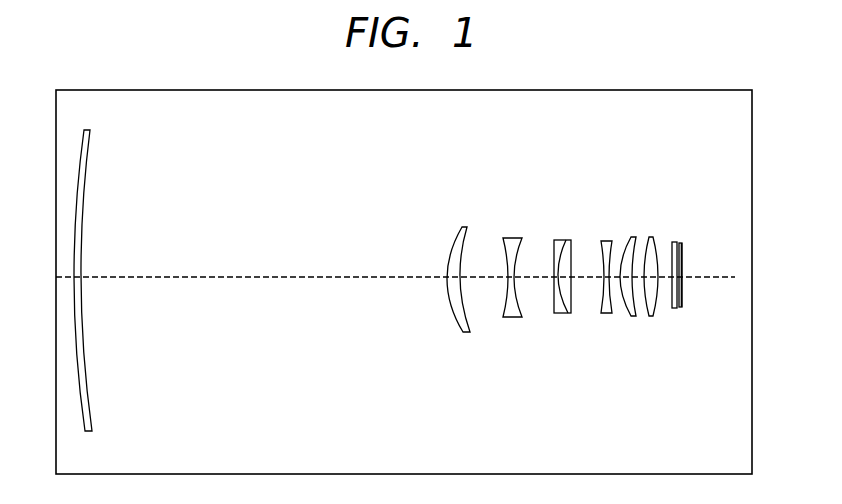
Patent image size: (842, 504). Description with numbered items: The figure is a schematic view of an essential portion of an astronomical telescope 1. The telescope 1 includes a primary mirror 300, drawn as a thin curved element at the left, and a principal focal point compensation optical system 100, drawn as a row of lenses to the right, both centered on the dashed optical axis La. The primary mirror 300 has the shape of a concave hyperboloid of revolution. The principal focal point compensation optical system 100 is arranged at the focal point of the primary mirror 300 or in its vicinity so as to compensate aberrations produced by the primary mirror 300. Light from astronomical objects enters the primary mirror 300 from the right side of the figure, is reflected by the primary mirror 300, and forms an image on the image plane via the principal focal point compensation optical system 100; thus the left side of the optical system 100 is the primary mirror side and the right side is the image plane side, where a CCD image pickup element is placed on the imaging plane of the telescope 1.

The astronomical telescope 1 is at (611, 90).
The primary mirror 300 is at (90, 144).
The principal focal point compensation optical system 100 is at (697, 218).
The optical axis LA is at (330, 278).